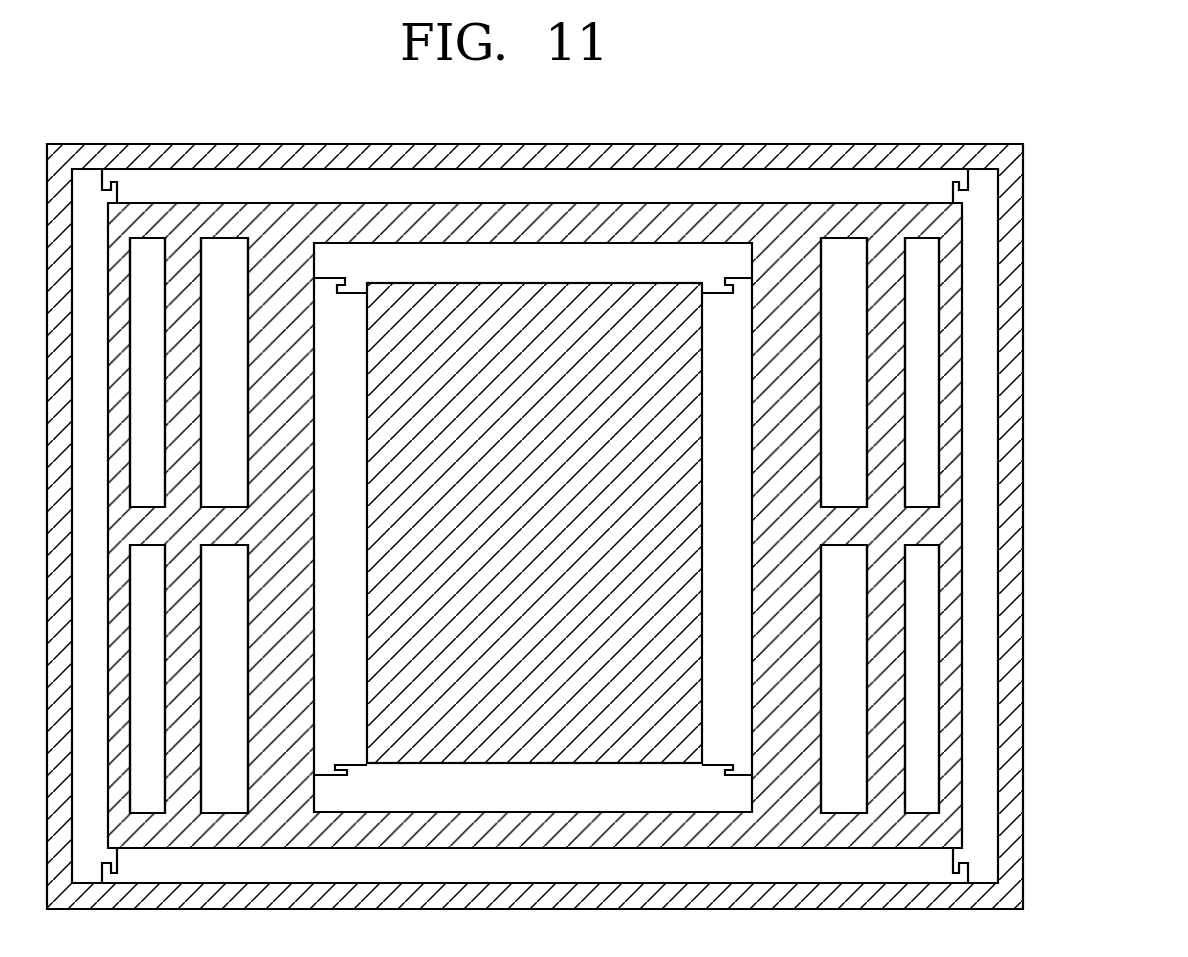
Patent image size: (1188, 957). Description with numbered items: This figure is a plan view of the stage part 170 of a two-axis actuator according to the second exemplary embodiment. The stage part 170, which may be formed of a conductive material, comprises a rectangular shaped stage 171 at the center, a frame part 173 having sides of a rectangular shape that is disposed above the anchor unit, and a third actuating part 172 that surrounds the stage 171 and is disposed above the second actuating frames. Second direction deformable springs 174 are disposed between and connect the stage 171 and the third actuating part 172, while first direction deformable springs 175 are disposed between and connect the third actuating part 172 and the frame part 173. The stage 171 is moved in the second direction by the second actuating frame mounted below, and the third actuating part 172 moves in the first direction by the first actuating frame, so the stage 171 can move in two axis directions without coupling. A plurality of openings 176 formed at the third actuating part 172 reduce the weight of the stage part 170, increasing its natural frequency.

The stage part 170 is at (598, 490).
The stage 171 is at (468, 355).
The third actuating part 172 is at (285, 312).
The frame part 173 is at (680, 152).
The second direction deformable springs 174 is at (742, 275).
The first direction deformable springs 175 is at (955, 182).
The openings 176 is at (153, 297).